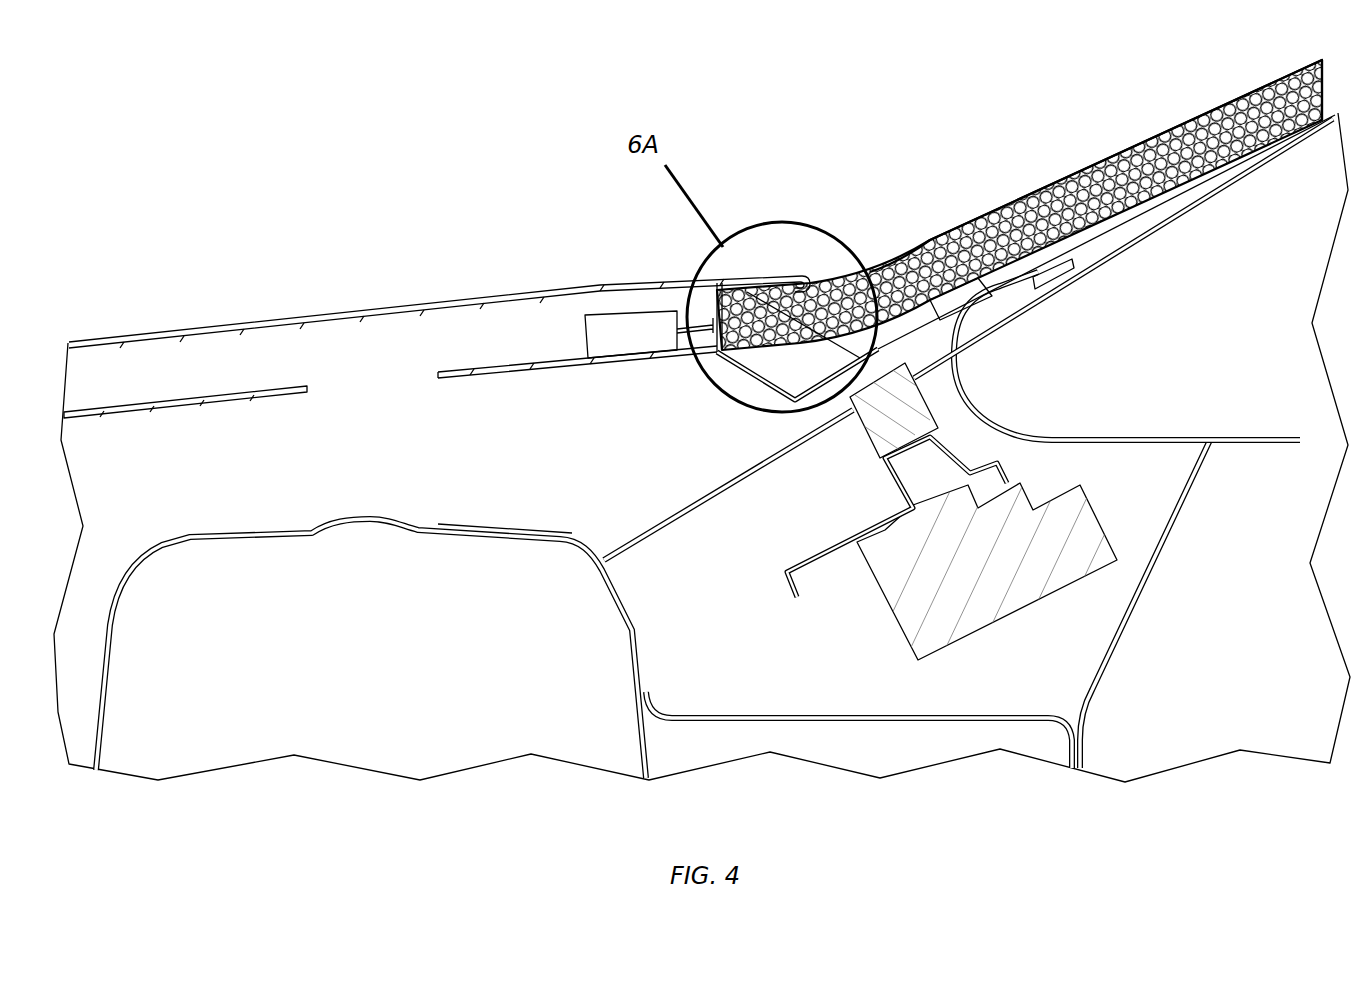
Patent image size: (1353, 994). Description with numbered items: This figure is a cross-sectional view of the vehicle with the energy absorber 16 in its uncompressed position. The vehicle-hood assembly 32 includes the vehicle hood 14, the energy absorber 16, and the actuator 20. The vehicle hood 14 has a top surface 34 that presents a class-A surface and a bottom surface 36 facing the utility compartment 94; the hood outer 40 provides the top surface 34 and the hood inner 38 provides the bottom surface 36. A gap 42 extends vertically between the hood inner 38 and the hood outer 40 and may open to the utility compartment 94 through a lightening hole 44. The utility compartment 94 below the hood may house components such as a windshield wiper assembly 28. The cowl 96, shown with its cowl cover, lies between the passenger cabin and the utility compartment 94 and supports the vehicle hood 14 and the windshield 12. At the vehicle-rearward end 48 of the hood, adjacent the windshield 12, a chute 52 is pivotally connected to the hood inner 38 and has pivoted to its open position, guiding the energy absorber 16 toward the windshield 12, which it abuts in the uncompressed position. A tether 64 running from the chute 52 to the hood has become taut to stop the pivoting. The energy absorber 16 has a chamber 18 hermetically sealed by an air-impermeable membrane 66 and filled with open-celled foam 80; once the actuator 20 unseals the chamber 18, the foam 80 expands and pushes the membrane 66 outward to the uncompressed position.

The windshield 12 is at (1170, 217).
The vehicle hood 14 is at (435, 264).
The energy absorber 16 is at (1019, 205).
The chamber 18 is at (983, 212).
The actuator 20 is at (585, 330).
The windshield wiper assembly 28 is at (992, 285).
The vehicle-hood assembly 32 is at (628, 278).
The top surface 34 is at (390, 306).
The bottom surface 36 is at (577, 396).
The hood inner 38 is at (602, 363).
The hood outer 40 is at (577, 290).
The gap 42 is at (450, 345).
The lightening hole 44 is at (310, 388).
The vehicle-rearward end 48 is at (798, 279).
The chute 52 is at (758, 386).
The tether 64 is at (847, 348).
The membrane 66 is at (1200, 127).
The foam 80 is at (1095, 178).
The utility compartment 94 is at (445, 468).
The cowl 96 is at (683, 508).